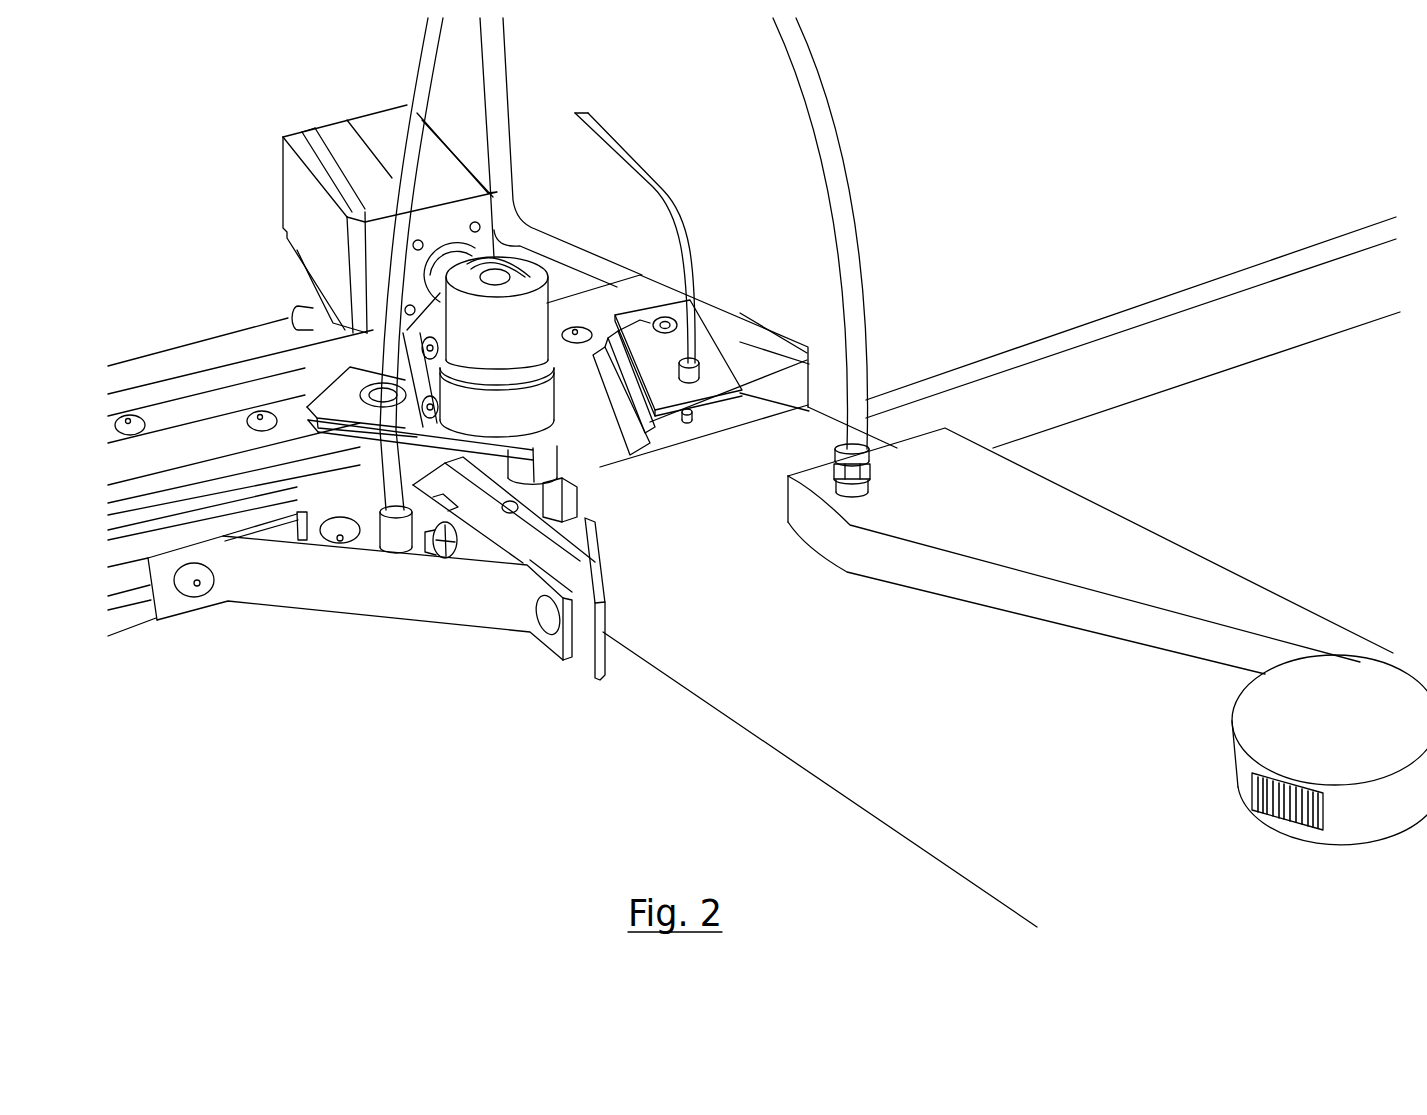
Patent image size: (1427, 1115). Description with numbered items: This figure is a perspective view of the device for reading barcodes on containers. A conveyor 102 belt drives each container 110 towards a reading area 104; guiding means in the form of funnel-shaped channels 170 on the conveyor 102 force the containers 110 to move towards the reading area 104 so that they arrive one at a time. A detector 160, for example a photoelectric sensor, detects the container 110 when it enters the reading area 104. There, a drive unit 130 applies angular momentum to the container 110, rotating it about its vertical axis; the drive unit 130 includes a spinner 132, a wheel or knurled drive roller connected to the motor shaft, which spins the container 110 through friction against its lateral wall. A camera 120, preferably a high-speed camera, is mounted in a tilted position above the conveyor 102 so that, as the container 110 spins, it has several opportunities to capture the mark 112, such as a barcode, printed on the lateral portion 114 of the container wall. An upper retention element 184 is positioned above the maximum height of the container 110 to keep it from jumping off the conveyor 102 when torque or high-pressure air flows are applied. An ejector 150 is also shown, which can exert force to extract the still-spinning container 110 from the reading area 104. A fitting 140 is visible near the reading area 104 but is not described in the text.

The conveyor 102 is at (907, 743).
The reading area 104 is at (663, 590).
The container 110 is at (1253, 711).
The mark 112 is at (1263, 810).
The lateral portion 114 is at (1233, 764).
The camera 120 is at (295, 200).
The drive unit 130 is at (468, 335).
The spinner 132 is at (547, 455).
The hose fitting 140 is at (787, 500).
The ejector 150 is at (433, 558).
The detector 160 is at (690, 409).
The funnel-shaped channels 170 is at (1098, 612).
The upper retention element 184 is at (633, 418).